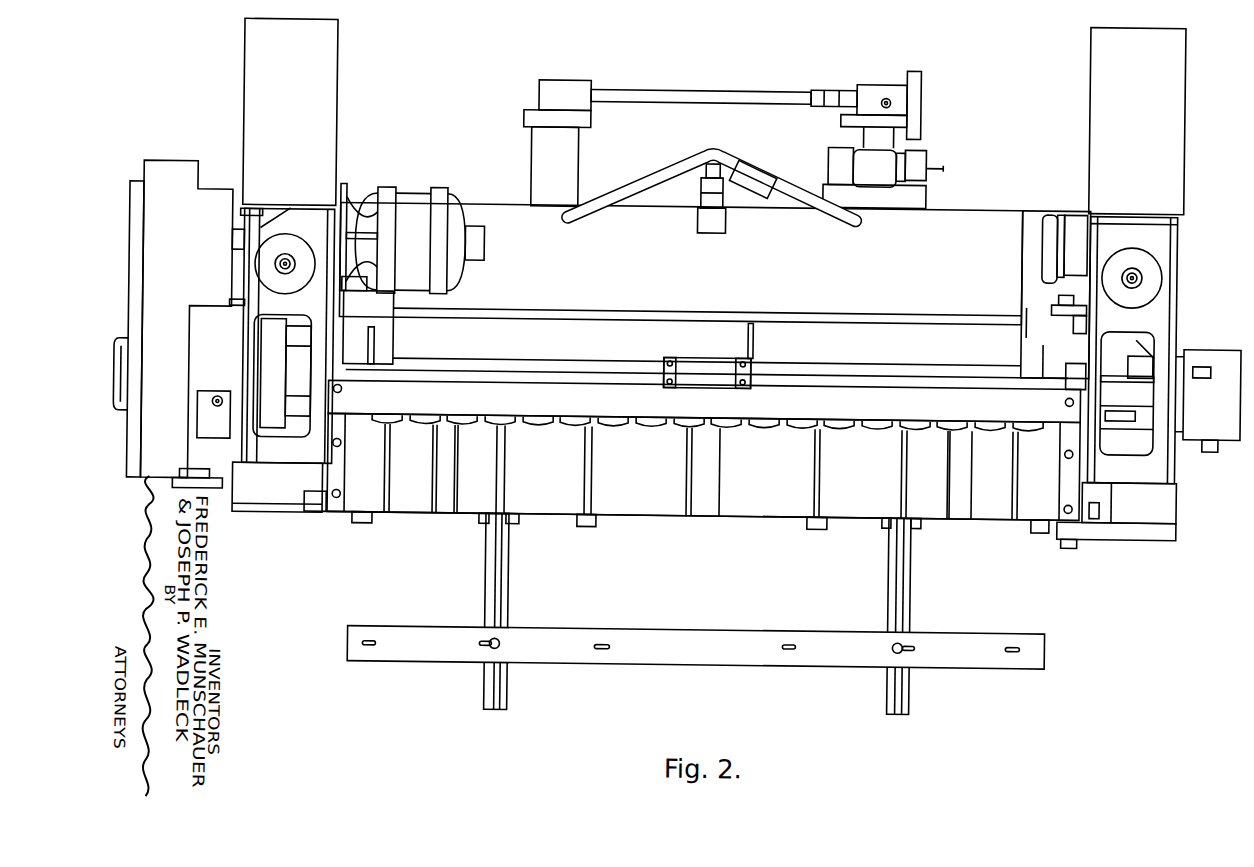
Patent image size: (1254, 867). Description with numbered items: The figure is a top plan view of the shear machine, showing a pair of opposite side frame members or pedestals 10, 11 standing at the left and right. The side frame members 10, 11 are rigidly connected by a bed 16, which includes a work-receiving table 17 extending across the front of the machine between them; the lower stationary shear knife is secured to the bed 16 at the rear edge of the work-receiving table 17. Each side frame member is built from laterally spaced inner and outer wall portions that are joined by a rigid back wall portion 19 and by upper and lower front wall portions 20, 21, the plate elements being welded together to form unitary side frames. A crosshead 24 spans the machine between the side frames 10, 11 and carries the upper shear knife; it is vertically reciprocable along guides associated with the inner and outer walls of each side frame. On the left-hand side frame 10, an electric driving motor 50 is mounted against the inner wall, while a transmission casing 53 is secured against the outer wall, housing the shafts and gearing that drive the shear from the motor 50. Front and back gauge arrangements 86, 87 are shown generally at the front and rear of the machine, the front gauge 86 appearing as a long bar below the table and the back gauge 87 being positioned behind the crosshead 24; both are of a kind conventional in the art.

The side frame member 10 is at (283, 520).
The side frame member 11 is at (1183, 175).
The bed 16 is at (765, 517).
The work-receiving table 17 is at (749, 491).
The back wall portion 19 is at (276, 139).
The upper front wall portion 20 is at (257, 470).
The lower front wall portion 21 is at (310, 514).
The crosshead 24 is at (973, 211).
The electric driving motor 50 is at (408, 205).
The transmission casing 53 is at (167, 380).
The front gauge arrangement 86 is at (598, 655).
The back gauge arrangement 87 is at (535, 170).